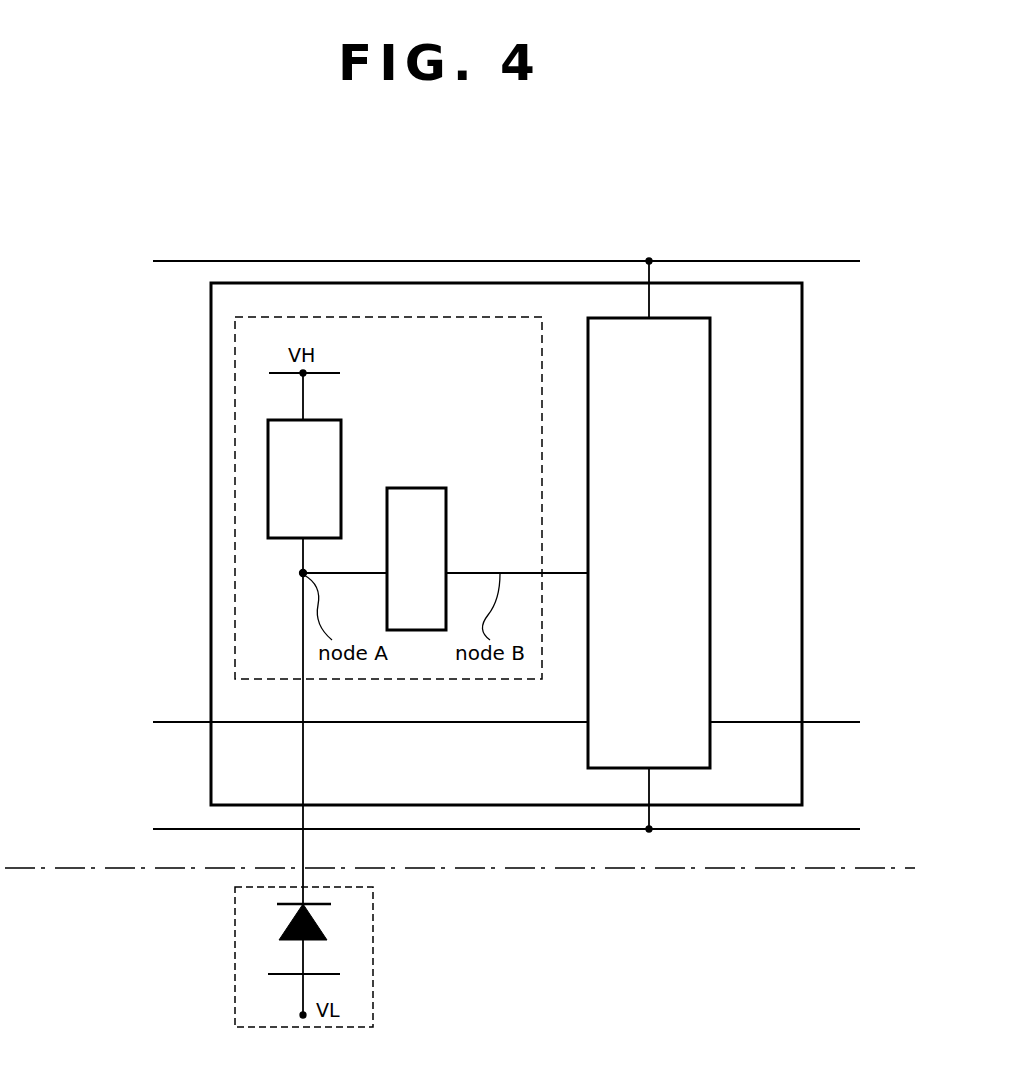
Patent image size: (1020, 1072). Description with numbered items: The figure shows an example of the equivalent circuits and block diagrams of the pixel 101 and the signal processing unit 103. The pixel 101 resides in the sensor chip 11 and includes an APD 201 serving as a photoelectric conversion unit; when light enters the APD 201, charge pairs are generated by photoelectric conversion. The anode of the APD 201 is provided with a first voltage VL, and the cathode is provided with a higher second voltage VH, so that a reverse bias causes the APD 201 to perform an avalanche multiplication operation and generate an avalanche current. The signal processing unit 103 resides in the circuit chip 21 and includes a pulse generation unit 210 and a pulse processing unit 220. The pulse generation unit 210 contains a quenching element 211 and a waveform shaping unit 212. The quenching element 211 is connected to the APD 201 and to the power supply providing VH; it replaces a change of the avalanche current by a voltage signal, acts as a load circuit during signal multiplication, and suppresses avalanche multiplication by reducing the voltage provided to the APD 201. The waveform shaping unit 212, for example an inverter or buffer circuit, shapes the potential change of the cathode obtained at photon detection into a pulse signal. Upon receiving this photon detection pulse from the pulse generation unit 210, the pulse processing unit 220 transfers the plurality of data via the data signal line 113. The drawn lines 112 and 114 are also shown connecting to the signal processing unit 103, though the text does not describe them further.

The first wiring (power supply line) 112 is at (832, 260).
The data signal line 113 is at (844, 828).
The second wiring (output line) 114 is at (844, 721).
The signal processing unit 103 is at (209, 573).
The pulse generation unit 210 is at (235, 400).
The quenching element 211 is at (342, 443).
The waveform shaping unit 212 is at (447, 516).
The pulse processing unit 220 is at (711, 467).
The circuit chip 21 is at (80, 825).
The sensor chip 11 is at (82, 920).
The pixel 101 is at (233, 987).
The APD 201 is at (328, 924).